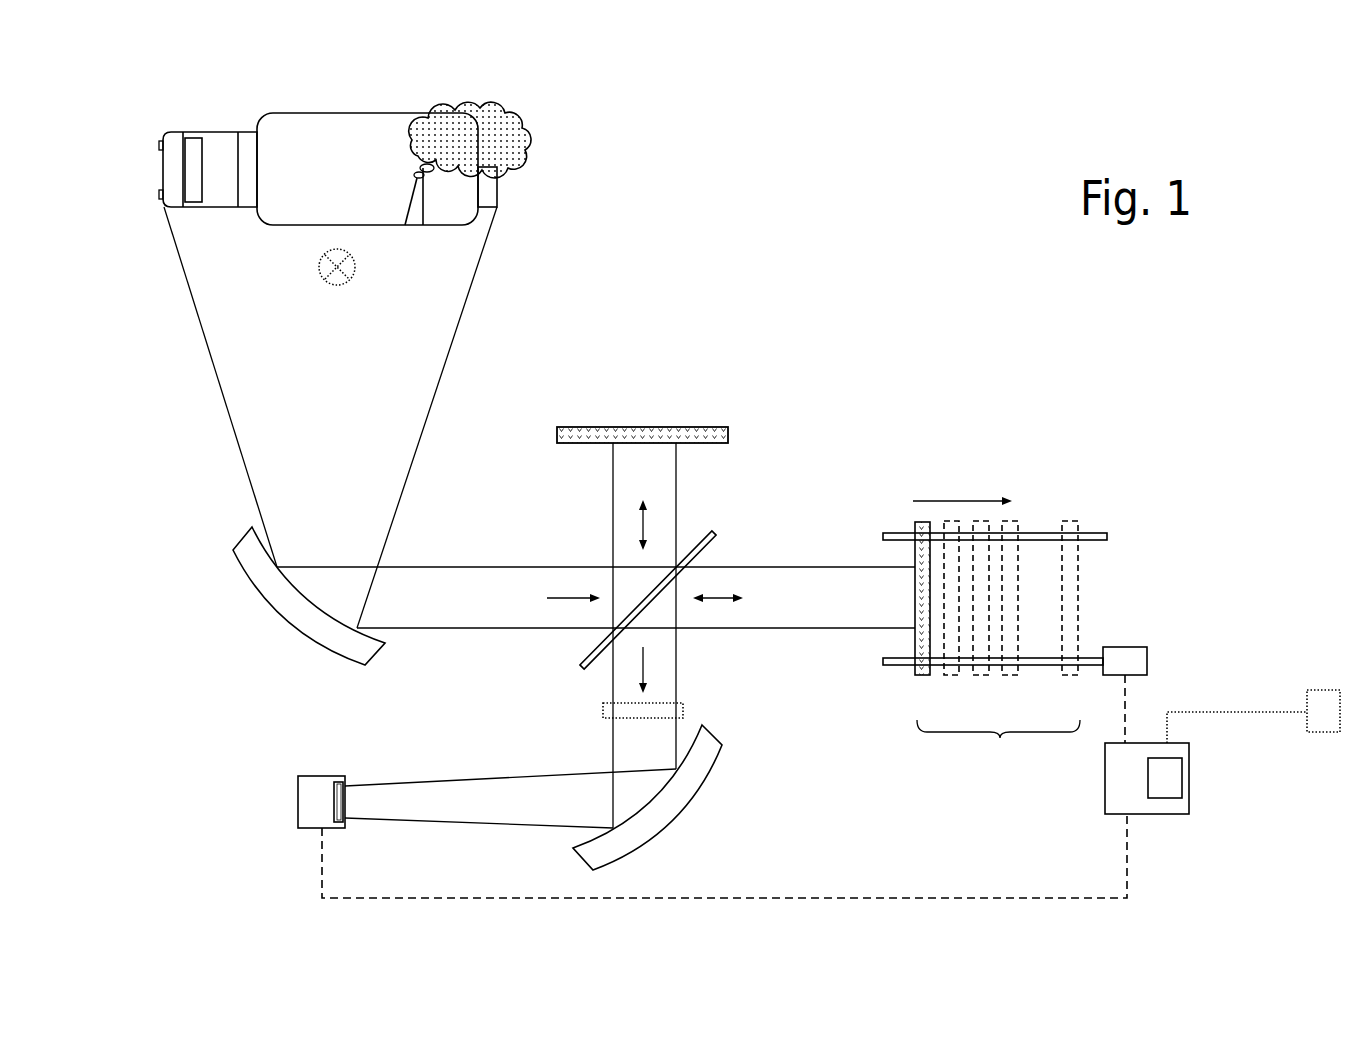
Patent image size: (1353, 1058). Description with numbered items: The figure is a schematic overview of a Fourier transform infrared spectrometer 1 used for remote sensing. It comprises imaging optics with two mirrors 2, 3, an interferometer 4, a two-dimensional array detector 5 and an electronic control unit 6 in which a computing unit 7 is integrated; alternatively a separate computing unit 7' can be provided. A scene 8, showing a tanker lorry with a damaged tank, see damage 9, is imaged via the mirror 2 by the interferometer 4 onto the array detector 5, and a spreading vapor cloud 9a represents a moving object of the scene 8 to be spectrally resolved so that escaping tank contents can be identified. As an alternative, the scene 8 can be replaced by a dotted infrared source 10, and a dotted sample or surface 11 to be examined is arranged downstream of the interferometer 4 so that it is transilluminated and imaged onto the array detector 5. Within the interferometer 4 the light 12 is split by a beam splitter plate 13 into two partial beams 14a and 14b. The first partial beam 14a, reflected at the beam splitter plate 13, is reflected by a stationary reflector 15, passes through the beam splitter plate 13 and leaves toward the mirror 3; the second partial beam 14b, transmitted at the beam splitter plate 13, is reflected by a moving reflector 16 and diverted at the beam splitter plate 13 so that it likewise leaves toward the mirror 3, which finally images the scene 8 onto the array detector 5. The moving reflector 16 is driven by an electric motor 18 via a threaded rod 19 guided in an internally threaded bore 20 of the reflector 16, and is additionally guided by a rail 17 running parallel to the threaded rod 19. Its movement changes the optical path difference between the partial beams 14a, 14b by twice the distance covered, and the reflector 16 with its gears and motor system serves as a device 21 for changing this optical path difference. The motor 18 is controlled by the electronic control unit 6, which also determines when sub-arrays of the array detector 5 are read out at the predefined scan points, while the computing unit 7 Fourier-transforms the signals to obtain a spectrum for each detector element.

The FTIR spectrometer 1 is at (848, 298).
The mirror 2 is at (260, 560).
The mirror 3 is at (700, 753).
The interferometer 4 is at (733, 488).
The array detector 5 is at (323, 790).
The electronic control unit 6 is at (1127, 768).
The computing unit 7 is at (1199, 789).
The separate computing unit 7' is at (1253, 685).
The scene 8 is at (250, 121).
The damage 9 is at (415, 212).
The vapor cloud 9a is at (503, 140).
The infrared source 10 is at (347, 267).
The sample 11 is at (665, 710).
The light 12 is at (313, 430).
The beam splitter plate 13 is at (578, 667).
The first partial beam 14a is at (630, 485).
The second partial beam 14b is at (793, 617).
The stationary reflector 15 is at (578, 436).
The moving reflector 16 is at (915, 553).
The rail 17 is at (1093, 537).
The electric motor 18 is at (1133, 663).
The threaded rod 19 is at (1088, 660).
The internally threaded bore 20 is at (918, 663).
The device for changing the optical path difference 21 is at (1133, 522).